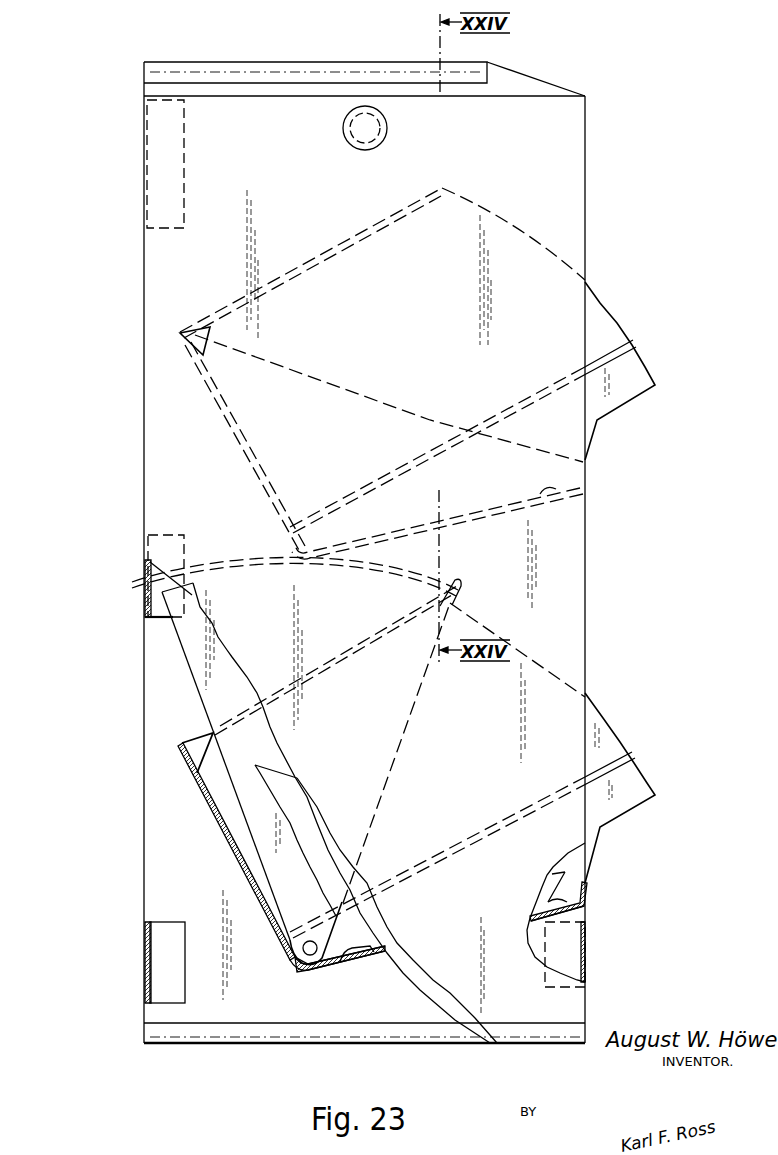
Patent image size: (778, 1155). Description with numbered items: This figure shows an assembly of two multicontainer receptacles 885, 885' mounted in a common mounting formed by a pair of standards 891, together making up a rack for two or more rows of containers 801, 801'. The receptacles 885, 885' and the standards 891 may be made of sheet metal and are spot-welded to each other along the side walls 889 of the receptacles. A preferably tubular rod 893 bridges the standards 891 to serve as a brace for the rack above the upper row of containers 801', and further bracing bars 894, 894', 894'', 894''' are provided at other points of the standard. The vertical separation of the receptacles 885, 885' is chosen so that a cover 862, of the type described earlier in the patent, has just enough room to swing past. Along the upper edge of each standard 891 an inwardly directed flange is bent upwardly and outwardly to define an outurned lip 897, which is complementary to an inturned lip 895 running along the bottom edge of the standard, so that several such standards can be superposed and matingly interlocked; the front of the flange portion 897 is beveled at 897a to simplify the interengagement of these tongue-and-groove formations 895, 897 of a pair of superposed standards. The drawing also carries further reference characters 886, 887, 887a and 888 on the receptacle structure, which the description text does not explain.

The standard 891 is at (572, 146).
The outurned lip 897 is at (403, 95).
The bevel 897a is at (522, 74).
The inturned lip 895 is at (410, 1040).
The tubular rod 893 is at (352, 148).
The bracing bar 894 is at (198, 164).
The bracing bar 894' is at (610, 954).
The bracing bar 894'' is at (121, 962).
The bracing bar 894''' is at (128, 576).
The container 801' is at (436, 373).
The receptacle 885' is at (389, 398).
The container 801 is at (409, 769).
The stop bracket 888 is at (585, 905).
The cover 862 is at (188, 659).
The receptacle 885 is at (376, 823).
The guide rail 886 is at (236, 860).
The bottom rail 887 is at (378, 955).
The tab on bottom rail 887a is at (343, 966).
The side wall 889 is at (332, 855).